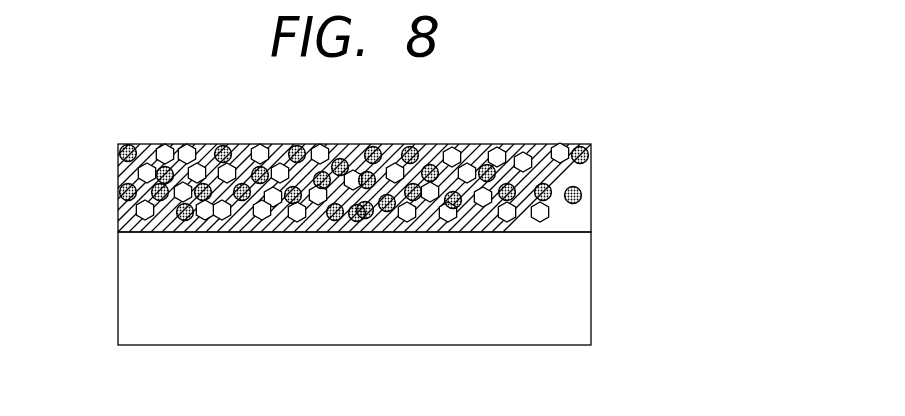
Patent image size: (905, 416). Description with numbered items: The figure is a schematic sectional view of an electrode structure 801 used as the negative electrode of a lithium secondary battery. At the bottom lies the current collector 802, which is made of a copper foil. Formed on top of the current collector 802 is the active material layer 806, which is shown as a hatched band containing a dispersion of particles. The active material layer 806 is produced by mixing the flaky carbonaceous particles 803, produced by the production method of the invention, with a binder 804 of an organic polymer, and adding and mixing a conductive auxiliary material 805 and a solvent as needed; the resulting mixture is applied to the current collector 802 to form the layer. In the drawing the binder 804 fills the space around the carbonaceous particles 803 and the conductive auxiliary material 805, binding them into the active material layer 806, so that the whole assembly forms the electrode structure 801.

The electrode structure 801 is at (713, 128).
The current collector 802 is at (580, 312).
The carbonaceous particle 803 is at (527, 167).
The binder 804 is at (545, 150).
The conductive auxiliary material 805 is at (590, 197).
The active material layer 806 is at (357, 156).